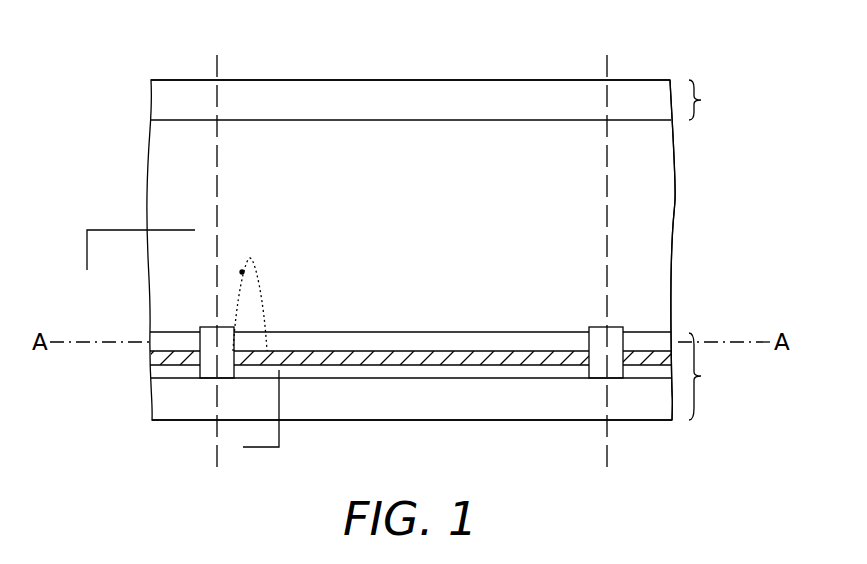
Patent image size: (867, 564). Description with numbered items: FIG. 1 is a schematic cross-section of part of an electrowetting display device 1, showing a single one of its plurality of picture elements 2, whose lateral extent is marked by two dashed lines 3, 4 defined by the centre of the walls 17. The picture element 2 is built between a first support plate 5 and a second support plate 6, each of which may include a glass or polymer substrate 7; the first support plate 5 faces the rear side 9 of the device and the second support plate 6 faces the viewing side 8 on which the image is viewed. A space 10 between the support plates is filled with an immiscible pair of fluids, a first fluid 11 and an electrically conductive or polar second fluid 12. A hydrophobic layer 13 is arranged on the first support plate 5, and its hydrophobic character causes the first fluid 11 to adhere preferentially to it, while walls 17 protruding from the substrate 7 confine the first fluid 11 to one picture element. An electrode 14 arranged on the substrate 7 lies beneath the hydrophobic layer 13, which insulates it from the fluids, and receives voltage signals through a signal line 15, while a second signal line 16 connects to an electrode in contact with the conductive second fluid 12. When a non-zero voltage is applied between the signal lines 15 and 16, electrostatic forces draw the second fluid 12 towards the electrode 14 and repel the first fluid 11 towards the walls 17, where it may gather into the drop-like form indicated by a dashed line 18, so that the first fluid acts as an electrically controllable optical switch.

The electrowetting display device 1 is at (762, 34).
The picture element 2 is at (425, 38).
The dashed line 3 is at (217, 58).
The dashed line 4 is at (607, 62).
The first support plate 5 is at (705, 376).
The second support plate 6 is at (705, 100).
The substrate 7 is at (632, 405).
The viewing side 8 is at (273, 80).
The rear side 9 is at (397, 420).
The space 10 is at (482, 135).
The first fluid 11 is at (568, 343).
The second fluid 12 is at (652, 225).
The hydrophobic layer 13 is at (485, 355).
The electrode 14 is at (398, 372).
The signal line 15 is at (260, 447).
The second signal line 16 is at (86, 247).
The walls 17 is at (212, 333).
The dashed line 18 is at (242, 272).